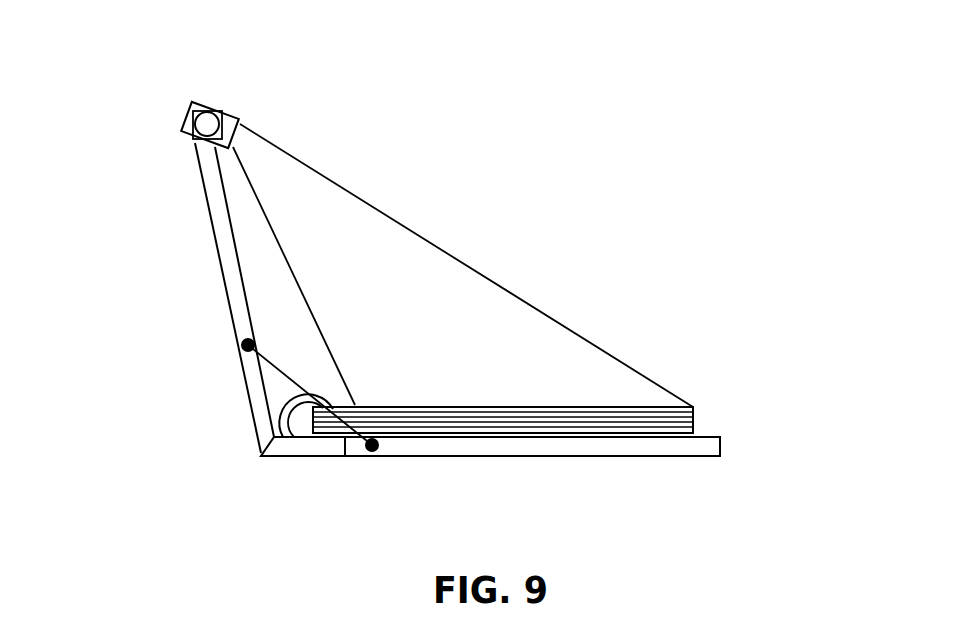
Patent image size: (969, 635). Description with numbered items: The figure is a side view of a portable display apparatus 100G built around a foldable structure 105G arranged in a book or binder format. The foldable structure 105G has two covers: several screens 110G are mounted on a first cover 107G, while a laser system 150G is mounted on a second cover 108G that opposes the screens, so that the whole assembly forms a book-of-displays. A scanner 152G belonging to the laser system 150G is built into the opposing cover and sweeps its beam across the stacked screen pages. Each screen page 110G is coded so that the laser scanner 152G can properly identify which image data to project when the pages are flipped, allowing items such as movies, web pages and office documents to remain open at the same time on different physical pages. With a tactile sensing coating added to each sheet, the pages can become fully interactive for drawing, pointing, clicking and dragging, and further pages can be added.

The portable display apparatus 100G is at (672, 152).
The foldable structure 105G is at (248, 451).
The first cover 107G is at (417, 452).
The second cover 108G is at (215, 195).
The screens 110G is at (487, 401).
The laser system 150G is at (146, 86).
The scanner 152G is at (240, 123).